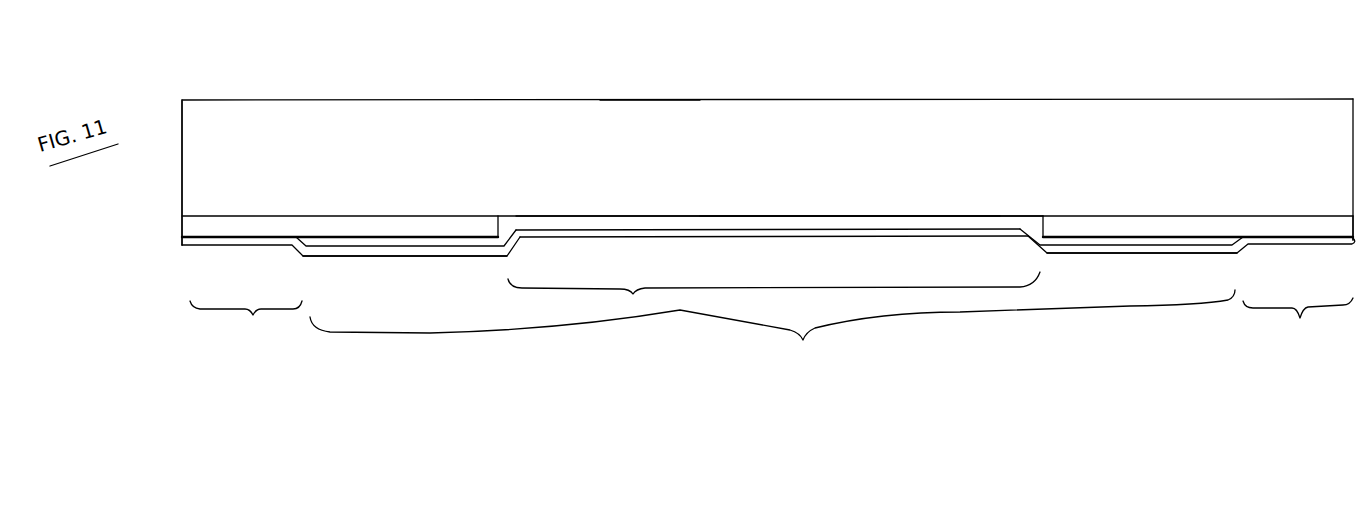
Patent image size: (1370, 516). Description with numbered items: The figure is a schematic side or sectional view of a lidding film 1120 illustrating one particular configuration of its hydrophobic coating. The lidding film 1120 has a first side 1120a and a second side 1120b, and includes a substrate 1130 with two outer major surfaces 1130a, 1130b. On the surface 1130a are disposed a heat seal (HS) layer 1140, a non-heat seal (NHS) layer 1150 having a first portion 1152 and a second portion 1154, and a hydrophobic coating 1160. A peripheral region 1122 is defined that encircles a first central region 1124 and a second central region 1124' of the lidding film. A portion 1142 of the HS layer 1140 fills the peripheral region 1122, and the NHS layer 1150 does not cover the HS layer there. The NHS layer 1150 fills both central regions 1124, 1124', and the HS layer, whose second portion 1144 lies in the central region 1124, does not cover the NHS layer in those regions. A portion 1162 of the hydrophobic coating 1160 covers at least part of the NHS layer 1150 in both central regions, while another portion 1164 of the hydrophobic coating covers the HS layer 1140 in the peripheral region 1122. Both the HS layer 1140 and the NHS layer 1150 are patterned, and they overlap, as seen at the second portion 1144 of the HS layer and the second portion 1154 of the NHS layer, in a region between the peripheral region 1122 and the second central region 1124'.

The lidding film 1120 is at (273, 45).
The first side of lidding film 1120a is at (940, 334).
The second side of lidding film 1120b is at (919, 54).
The peripheral region 1122 is at (771, 326).
The first central region 1124 is at (772, 331).
The second central region 1124' is at (774, 321).
The substrate 1130 is at (447, 163).
The outer major surface of substrate 1130a is at (654, 209).
The outer major surface of substrate 1130b is at (650, 108).
The HS layer 1140 is at (182, 226).
The portion of HS layer 1142 is at (229, 228).
The second portion of HS layer 1144 is at (368, 222).
The NHS layer 1150 is at (753, 222).
The first portion of NHS layer 1152 is at (866, 218).
The second portion of NHS layer 1154 is at (393, 243).
The hydrophobic coating 1160 is at (816, 232).
The portion of hydrophobic coating 1162 is at (846, 236).
The portion of hydrophobic coating 1164 is at (241, 247).